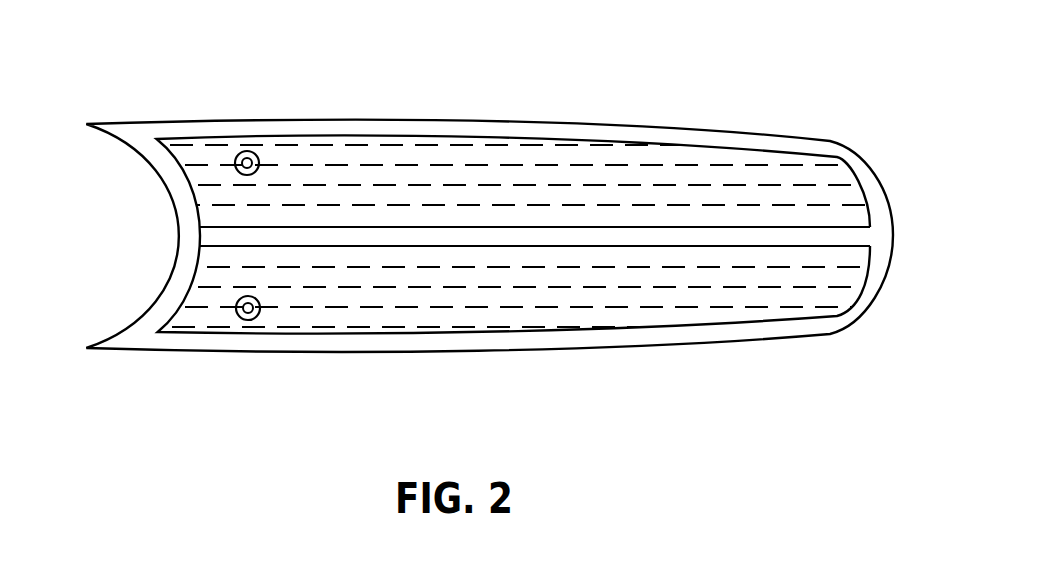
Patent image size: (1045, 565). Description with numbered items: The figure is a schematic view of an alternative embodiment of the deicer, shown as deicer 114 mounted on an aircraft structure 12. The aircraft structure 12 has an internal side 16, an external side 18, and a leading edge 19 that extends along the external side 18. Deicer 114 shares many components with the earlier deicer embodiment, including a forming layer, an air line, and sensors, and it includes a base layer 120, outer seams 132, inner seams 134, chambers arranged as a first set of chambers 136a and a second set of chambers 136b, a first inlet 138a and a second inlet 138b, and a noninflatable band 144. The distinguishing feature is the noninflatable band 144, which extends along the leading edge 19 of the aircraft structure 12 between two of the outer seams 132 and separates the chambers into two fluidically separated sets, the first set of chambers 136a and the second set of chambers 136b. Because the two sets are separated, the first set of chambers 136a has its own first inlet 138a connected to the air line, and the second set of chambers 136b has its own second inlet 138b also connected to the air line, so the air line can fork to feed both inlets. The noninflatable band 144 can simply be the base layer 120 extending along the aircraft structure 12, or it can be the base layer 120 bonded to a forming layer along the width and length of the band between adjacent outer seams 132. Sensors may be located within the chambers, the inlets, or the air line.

The aircraft structure 12 is at (130, 108).
The internal side 16 is at (106, 321).
The external side 18 is at (728, 331).
The leading edge 19 is at (867, 230).
The deicer 114 is at (380, 121).
The base layer 120 is at (187, 212).
The outer seams 132 is at (187, 167).
The inner seams 134 is at (682, 167).
The first set of chambers 136a is at (543, 180).
The second set of chambers 136b is at (600, 297).
The first inlet 138a is at (247, 151).
The second inlet 138b is at (250, 321).
The noninflatable band 144 is at (452, 235).